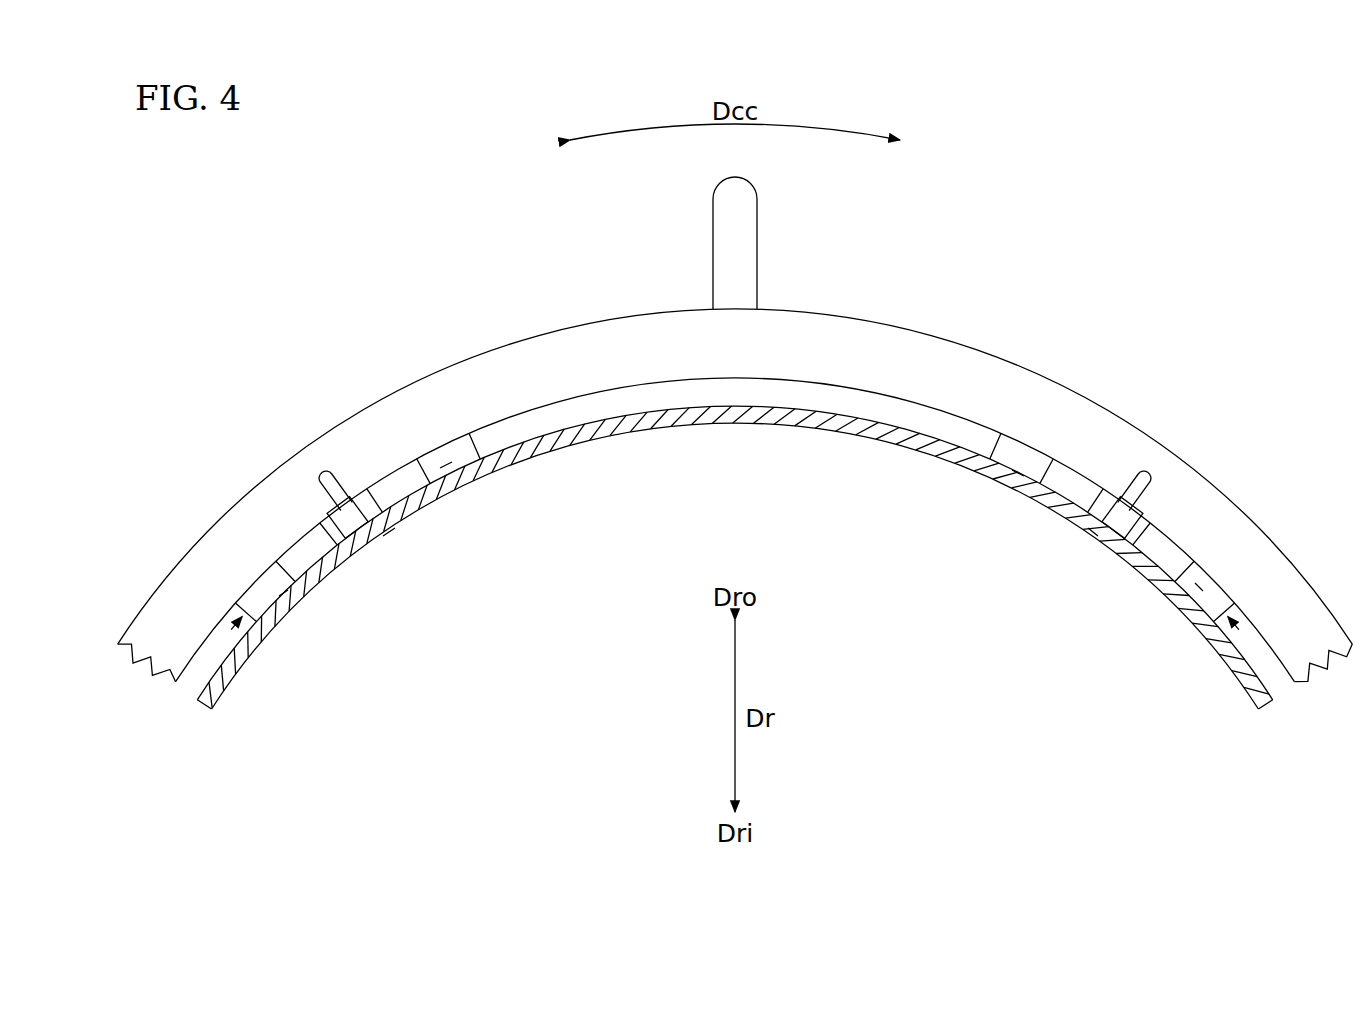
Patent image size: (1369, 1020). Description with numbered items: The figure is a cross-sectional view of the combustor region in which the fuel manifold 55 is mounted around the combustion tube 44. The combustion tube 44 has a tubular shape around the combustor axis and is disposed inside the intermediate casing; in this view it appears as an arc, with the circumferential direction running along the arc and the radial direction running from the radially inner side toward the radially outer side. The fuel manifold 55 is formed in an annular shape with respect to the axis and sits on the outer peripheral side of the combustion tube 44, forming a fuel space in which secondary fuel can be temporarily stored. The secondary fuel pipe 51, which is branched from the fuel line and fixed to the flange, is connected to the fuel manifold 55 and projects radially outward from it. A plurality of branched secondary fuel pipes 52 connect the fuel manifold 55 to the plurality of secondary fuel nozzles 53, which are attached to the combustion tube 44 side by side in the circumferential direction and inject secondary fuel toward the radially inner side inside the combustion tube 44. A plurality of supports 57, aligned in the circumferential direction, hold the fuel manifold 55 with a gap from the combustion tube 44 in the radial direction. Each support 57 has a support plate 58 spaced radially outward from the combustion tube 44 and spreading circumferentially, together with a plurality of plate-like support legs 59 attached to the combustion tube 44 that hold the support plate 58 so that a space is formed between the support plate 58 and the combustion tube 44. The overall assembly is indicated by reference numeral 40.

The ring segment assembly 40 is at (1098, 228).
The combustion tube 44 is at (692, 425).
The secondary fuel pipe 51 is at (752, 210).
The branched secondary fuel pipe 52 is at (323, 476).
The secondary fuel nozzle 53 is at (373, 547).
The fuel manifold 55 is at (553, 340).
The support 57 is at (237, 640).
The support plate 58 is at (310, 543).
The support leg 59 is at (445, 465).